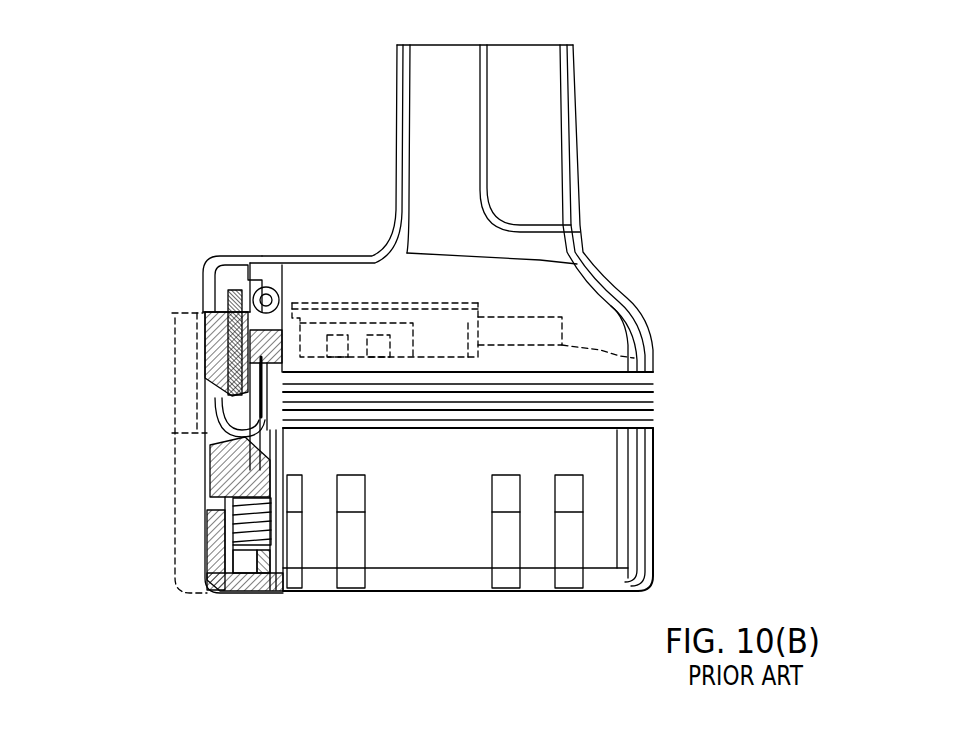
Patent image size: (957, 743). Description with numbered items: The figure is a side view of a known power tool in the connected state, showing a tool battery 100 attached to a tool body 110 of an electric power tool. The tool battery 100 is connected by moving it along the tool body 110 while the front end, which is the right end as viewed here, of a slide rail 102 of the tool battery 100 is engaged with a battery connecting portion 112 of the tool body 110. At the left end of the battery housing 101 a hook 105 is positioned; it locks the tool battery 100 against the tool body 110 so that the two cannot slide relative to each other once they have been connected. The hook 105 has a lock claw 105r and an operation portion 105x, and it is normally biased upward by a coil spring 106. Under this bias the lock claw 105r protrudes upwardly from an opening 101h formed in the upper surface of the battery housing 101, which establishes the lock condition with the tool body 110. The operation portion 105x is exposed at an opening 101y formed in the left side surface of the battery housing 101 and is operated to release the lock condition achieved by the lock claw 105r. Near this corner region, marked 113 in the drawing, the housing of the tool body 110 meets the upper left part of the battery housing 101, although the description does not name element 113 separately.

The tool battery 100 is at (664, 491).
The battery housing 101 is at (200, 342).
The opening 101h is at (177, 317).
The opening 101y is at (210, 497).
The slide rail 102 is at (553, 318).
The hook 105 is at (210, 405).
The lock claw 105r is at (225, 300).
The operation portion 105x is at (210, 423).
The coil spring 106 is at (258, 592).
The tool body 110 is at (597, 160).
The battery connecting portion 112 is at (492, 290).
The housing corner portion 113 is at (220, 300).